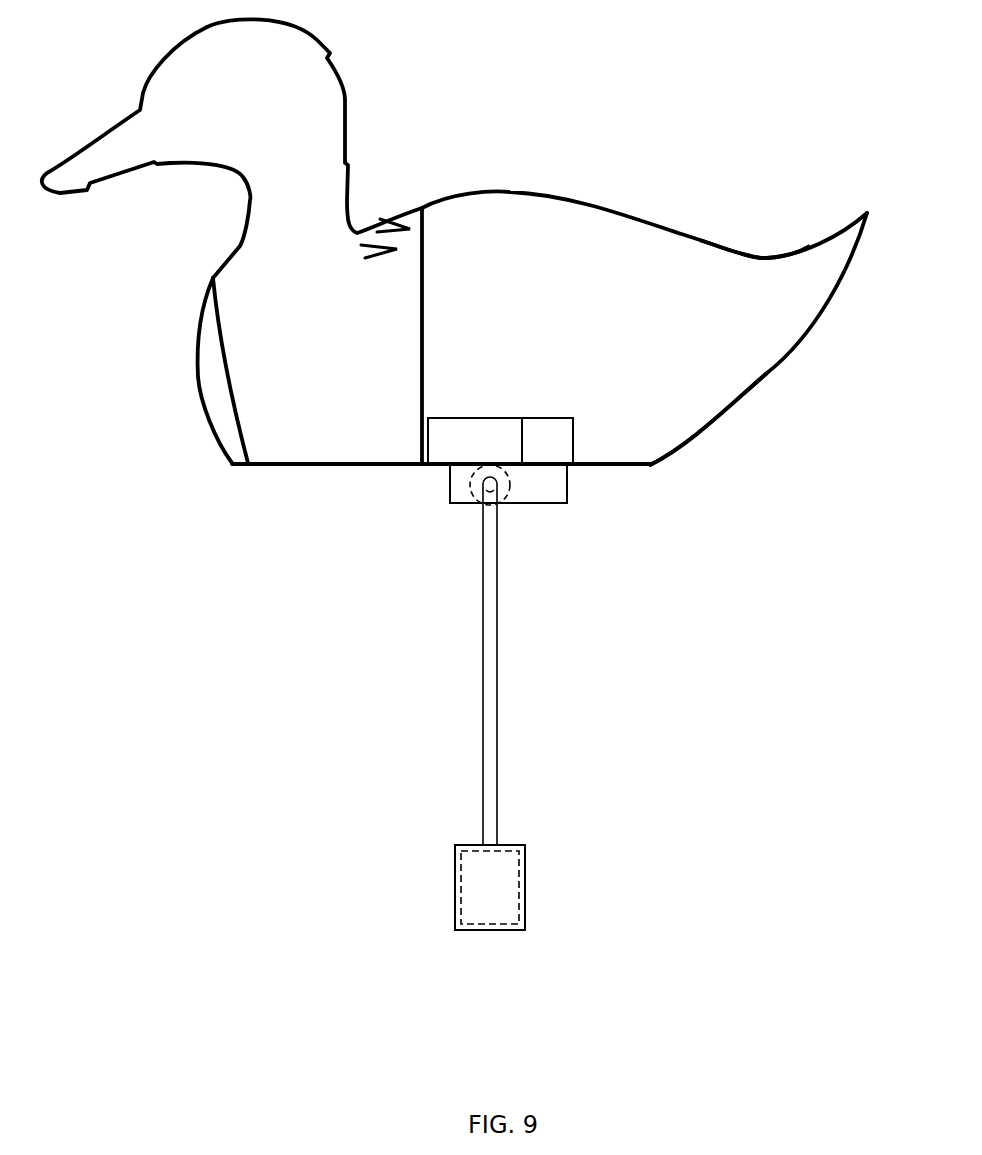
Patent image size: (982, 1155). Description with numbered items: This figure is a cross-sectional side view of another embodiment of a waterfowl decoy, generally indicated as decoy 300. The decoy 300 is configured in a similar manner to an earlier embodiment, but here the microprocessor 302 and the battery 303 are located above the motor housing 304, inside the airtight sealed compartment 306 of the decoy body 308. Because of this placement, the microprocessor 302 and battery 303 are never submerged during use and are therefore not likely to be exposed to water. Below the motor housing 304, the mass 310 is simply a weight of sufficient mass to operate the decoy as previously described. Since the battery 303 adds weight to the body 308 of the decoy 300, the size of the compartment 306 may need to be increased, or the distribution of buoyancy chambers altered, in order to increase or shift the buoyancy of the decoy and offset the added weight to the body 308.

The decoy 300 is at (461, 167).
The microprocessor 302 is at (552, 417).
The battery 303 is at (453, 417).
The motor housing 304 is at (568, 495).
The airtight sealed compartment 306 is at (658, 423).
The decoy body 308 is at (782, 258).
The mass 310 is at (525, 890).